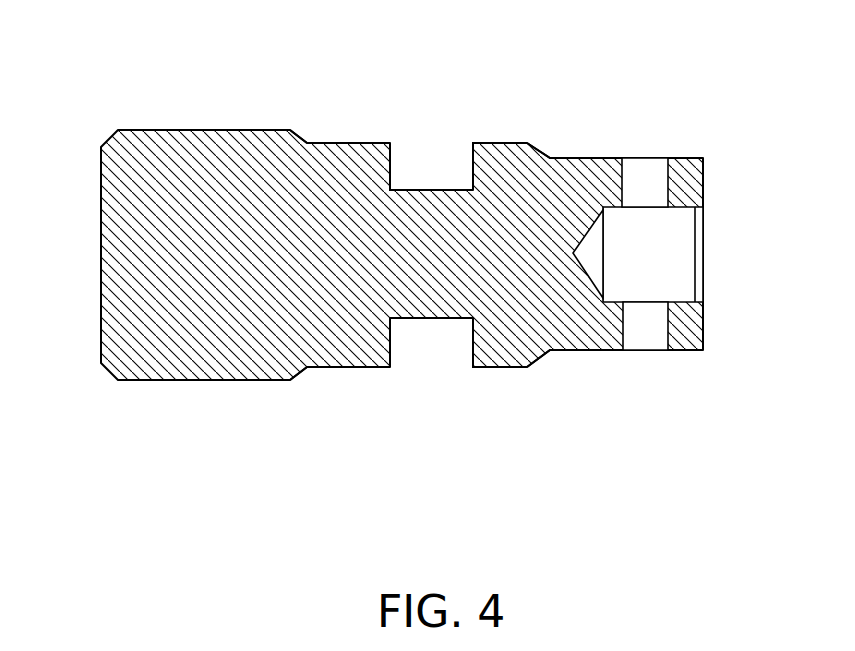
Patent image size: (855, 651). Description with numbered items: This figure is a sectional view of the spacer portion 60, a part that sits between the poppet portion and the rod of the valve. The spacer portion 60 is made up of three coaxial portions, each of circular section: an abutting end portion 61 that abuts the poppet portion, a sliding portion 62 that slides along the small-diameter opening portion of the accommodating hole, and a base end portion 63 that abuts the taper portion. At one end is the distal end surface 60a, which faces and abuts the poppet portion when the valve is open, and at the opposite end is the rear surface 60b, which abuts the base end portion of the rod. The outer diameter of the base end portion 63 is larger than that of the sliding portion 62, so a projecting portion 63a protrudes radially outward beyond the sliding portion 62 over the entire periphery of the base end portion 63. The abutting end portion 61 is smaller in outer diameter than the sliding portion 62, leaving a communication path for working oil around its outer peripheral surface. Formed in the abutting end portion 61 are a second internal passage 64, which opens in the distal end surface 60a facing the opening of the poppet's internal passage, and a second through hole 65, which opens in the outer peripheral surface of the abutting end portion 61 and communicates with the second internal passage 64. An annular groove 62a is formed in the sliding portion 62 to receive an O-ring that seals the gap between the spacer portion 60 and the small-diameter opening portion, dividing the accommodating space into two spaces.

The spacer portion 60 is at (107, 125).
The distal end surface 60a is at (705, 172).
The rear surface 60b is at (100, 335).
The abutting end portion 61 is at (580, 158).
The sliding portion 62 is at (498, 142).
The annular groove 62a is at (432, 318).
The base end portion 63 is at (220, 130).
The projecting portion 63a is at (303, 138).
The second internal passage 64 is at (683, 206).
The second through hole 65 is at (667, 325).